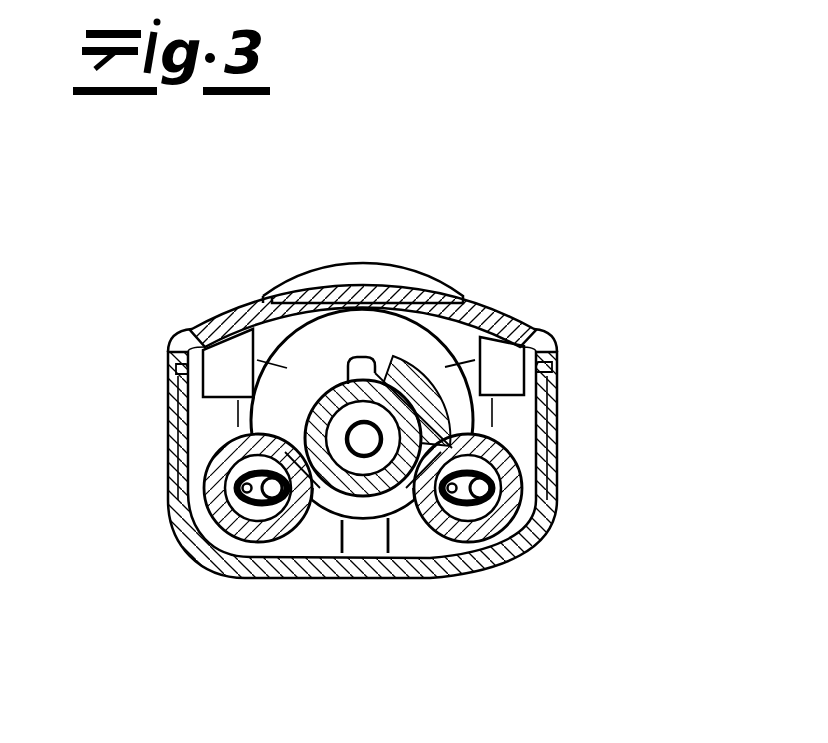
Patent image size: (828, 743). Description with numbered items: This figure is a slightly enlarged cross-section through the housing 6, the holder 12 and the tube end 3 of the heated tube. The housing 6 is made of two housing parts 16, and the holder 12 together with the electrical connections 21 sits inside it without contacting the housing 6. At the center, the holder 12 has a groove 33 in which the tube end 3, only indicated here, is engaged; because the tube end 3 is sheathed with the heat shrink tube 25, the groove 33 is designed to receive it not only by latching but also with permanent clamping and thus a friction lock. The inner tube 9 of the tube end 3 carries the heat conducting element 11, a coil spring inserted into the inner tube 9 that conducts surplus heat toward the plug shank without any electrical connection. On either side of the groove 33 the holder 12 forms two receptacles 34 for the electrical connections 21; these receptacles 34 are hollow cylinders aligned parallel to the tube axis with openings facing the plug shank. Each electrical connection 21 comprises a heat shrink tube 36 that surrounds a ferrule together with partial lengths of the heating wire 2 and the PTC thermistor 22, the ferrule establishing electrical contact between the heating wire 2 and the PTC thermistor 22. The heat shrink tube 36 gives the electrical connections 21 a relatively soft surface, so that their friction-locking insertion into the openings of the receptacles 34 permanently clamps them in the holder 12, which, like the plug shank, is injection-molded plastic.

The heating wire 2 is at (225, 537).
The tube end 3 is at (393, 540).
The housing 6 is at (574, 522).
The inner tube 9 is at (335, 500).
The heat conducting element 11 is at (320, 503).
The holder 12 is at (414, 343).
The housing part 16 is at (490, 317).
The electrical connection 21 is at (222, 420).
The PTC thermistor 22 is at (272, 505).
The heat shrink tube 25 is at (342, 540).
The groove 33 is at (316, 372).
The receptacle 34 is at (245, 467).
The heat shrink tube 36 is at (238, 484).